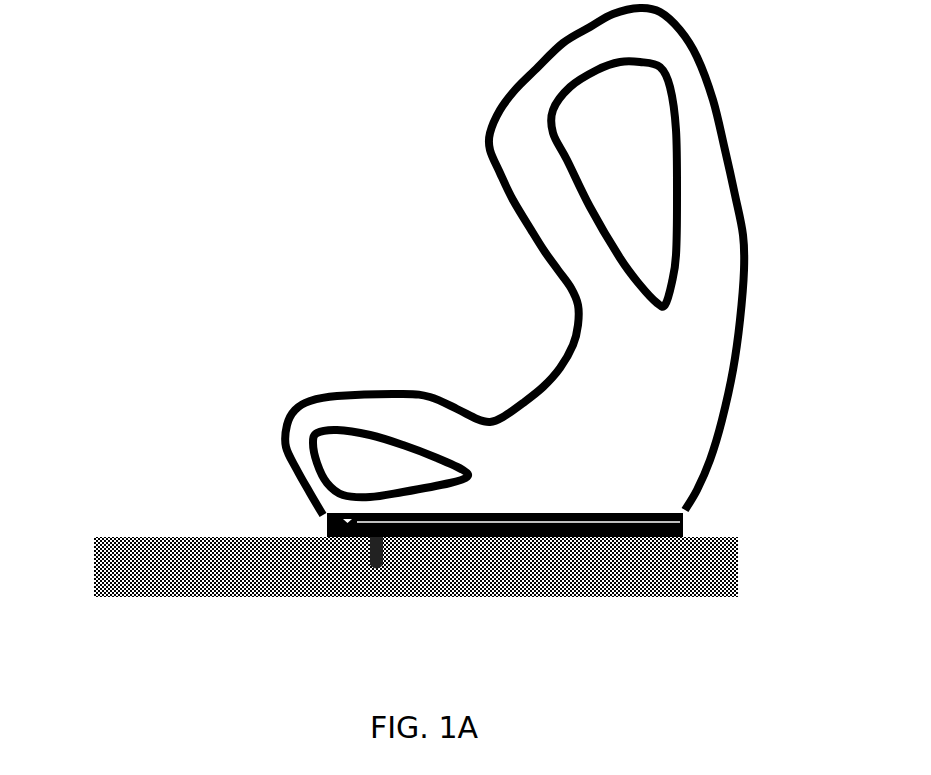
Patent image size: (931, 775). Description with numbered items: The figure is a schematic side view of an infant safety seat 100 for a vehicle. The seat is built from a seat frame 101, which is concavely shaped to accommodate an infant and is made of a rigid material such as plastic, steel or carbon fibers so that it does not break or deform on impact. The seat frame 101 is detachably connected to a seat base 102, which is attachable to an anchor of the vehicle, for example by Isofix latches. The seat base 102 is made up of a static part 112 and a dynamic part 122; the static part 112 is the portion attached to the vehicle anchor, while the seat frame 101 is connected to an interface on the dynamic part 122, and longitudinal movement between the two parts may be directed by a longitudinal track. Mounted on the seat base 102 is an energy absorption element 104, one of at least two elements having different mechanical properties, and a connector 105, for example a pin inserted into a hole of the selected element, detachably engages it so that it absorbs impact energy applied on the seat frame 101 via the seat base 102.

The safety seat 100 is at (393, 132).
The seat frame 101 is at (537, 247).
The seat base 102 is at (203, 497).
The dynamic part 122 is at (320, 525).
The static part 112 is at (167, 555).
The energy absorption element 104 is at (465, 570).
The connector 105 is at (362, 567).